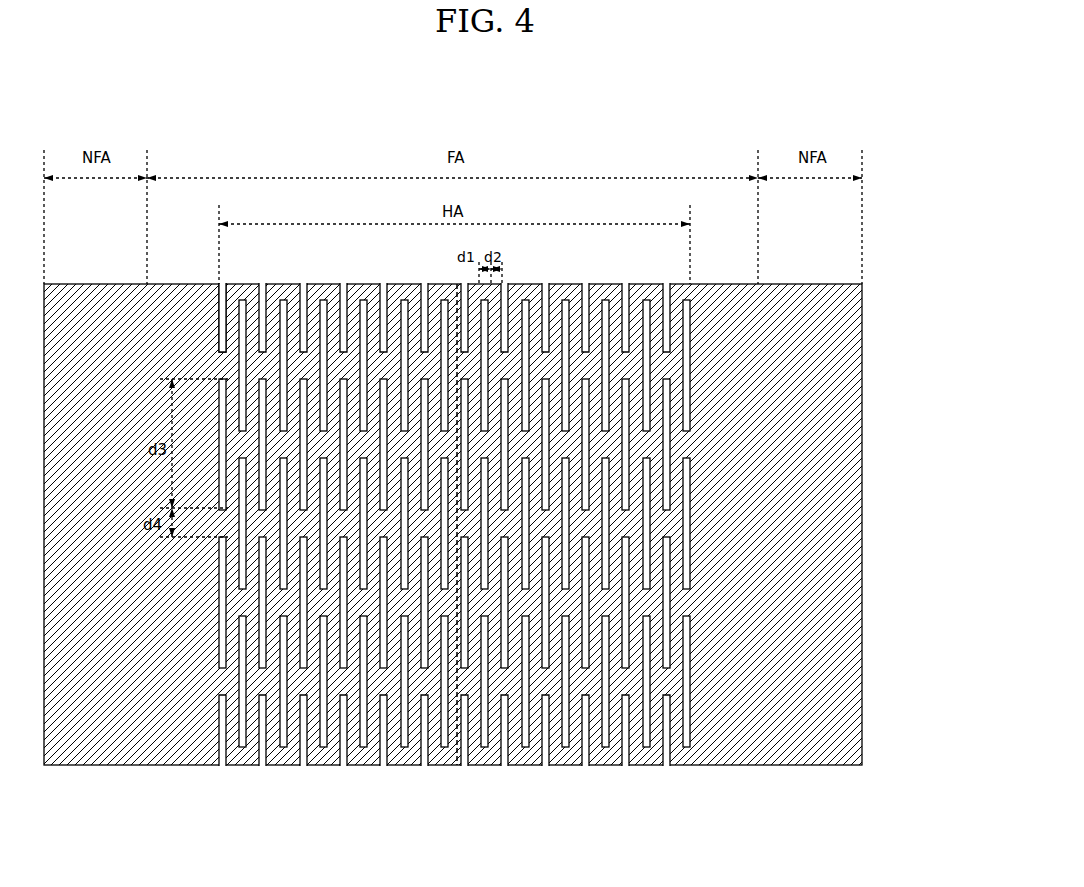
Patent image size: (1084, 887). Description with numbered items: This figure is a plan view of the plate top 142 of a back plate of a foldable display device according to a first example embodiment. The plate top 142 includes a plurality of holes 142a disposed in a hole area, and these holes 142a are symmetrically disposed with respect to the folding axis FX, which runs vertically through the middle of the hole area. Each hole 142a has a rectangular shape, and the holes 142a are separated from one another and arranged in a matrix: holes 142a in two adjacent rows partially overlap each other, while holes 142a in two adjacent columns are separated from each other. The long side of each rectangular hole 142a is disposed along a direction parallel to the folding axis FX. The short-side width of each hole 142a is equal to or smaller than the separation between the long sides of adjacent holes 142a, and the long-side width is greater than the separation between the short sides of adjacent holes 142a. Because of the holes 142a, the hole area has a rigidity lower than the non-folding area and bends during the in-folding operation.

The plate top 142 is at (862, 602).
The hole 142a is at (218, 325).
The folding axis FX is at (460, 752).